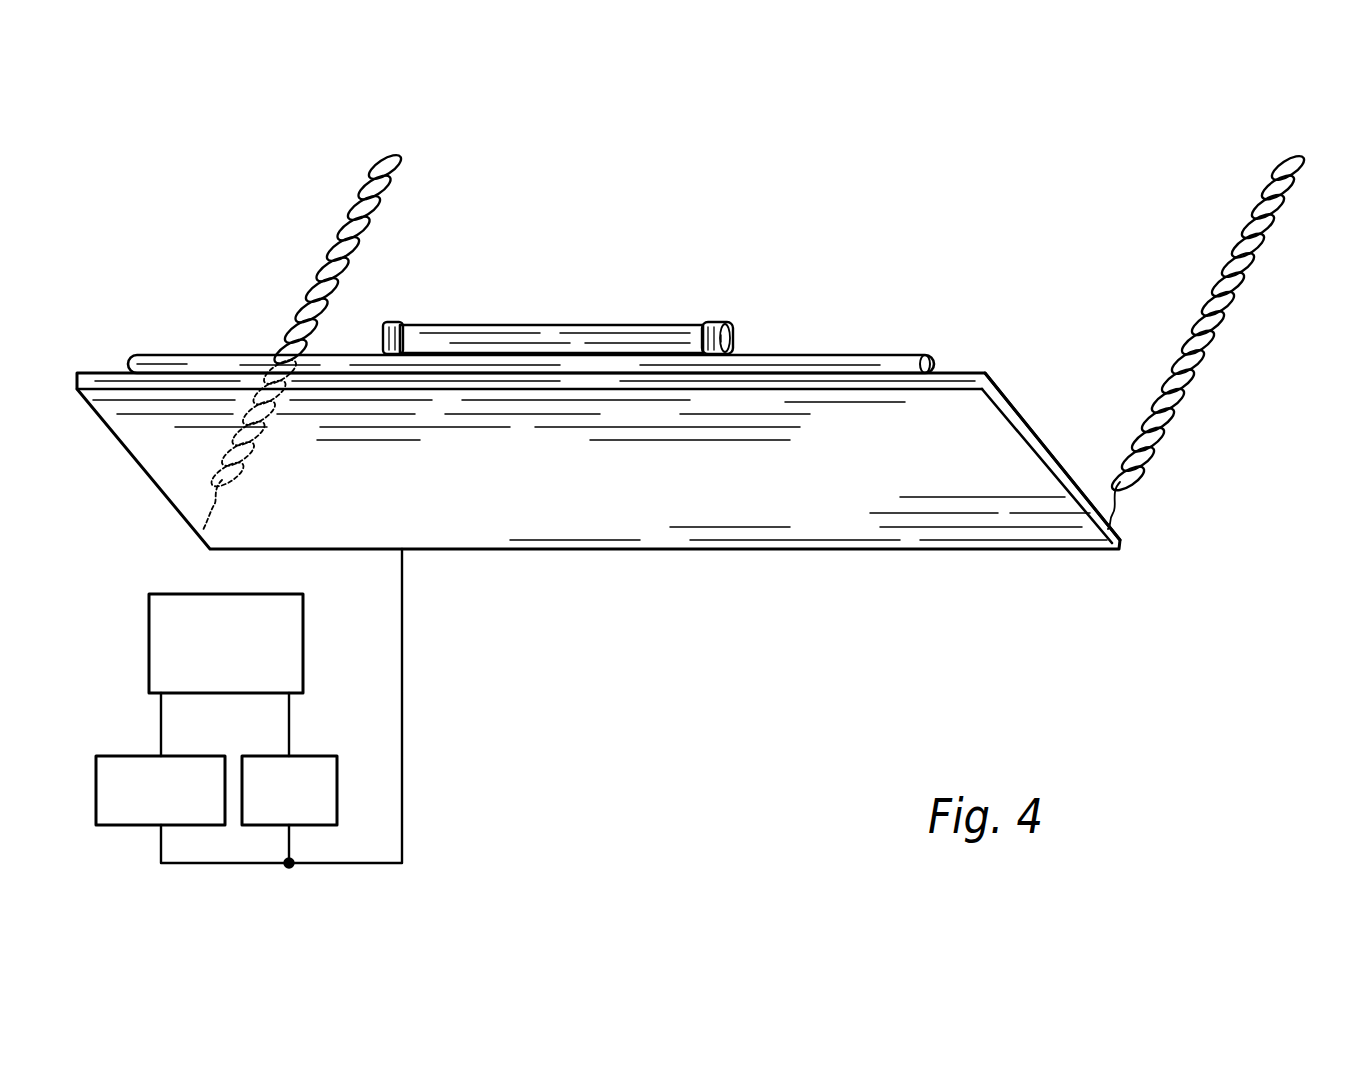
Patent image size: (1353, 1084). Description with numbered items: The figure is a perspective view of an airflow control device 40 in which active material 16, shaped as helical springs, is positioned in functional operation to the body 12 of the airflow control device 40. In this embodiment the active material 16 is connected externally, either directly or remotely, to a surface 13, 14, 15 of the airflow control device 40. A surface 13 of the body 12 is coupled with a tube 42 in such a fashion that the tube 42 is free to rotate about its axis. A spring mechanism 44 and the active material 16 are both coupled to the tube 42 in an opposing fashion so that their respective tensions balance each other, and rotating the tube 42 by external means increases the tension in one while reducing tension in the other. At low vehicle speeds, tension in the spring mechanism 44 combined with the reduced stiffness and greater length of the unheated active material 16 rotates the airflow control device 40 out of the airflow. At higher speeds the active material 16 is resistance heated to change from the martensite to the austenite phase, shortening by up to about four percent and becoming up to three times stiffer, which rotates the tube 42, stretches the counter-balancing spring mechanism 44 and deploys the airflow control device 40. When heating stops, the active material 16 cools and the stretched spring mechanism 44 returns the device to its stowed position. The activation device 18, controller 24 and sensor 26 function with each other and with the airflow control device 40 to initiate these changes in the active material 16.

The airflow control device 40 is at (1030, 189).
The body 12 is at (149, 482).
The surface 13 is at (1012, 403).
The surface 14 is at (1075, 478).
The surface 15 is at (573, 527).
The active material 16 is at (334, 226).
The tube 42 is at (828, 356).
The spring mechanism 44 is at (563, 332).
The controller 24 is at (149, 632).
The activation device 18 is at (133, 756).
The sensor 26 is at (315, 756).